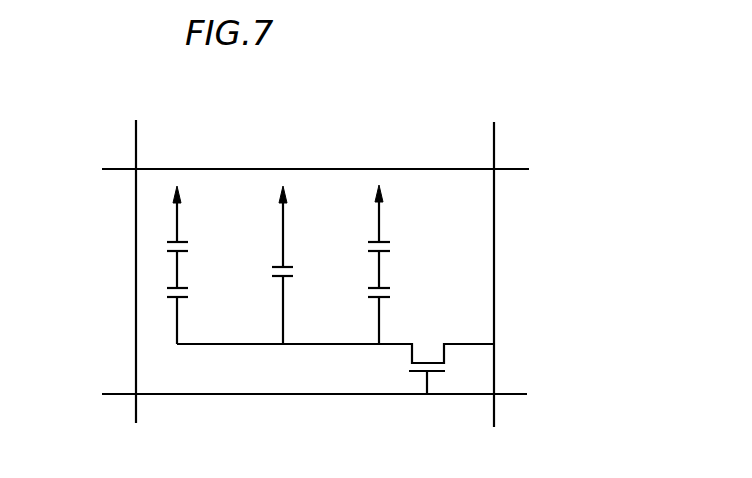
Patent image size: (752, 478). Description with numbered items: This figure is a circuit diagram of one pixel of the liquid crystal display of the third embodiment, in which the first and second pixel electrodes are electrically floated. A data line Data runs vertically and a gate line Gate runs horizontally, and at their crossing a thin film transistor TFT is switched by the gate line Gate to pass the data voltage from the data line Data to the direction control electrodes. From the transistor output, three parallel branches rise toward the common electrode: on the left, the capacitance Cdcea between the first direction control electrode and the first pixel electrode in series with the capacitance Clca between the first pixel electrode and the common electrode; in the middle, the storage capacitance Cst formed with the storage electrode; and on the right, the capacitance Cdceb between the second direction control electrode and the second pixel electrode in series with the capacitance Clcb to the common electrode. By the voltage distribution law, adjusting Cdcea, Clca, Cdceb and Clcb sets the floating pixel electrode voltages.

The data line Data is at (315, 259).
The gate line Gate is at (288, 394).
The thin film transistor TFT is at (404, 367).
The capacitance Clca is at (196, 218).
The capacitance Cdcea is at (204, 297).
The storage capacitance Cst is at (298, 265).
The capacitance Clcb is at (397, 218).
The capacitance Cdceb is at (405, 297).